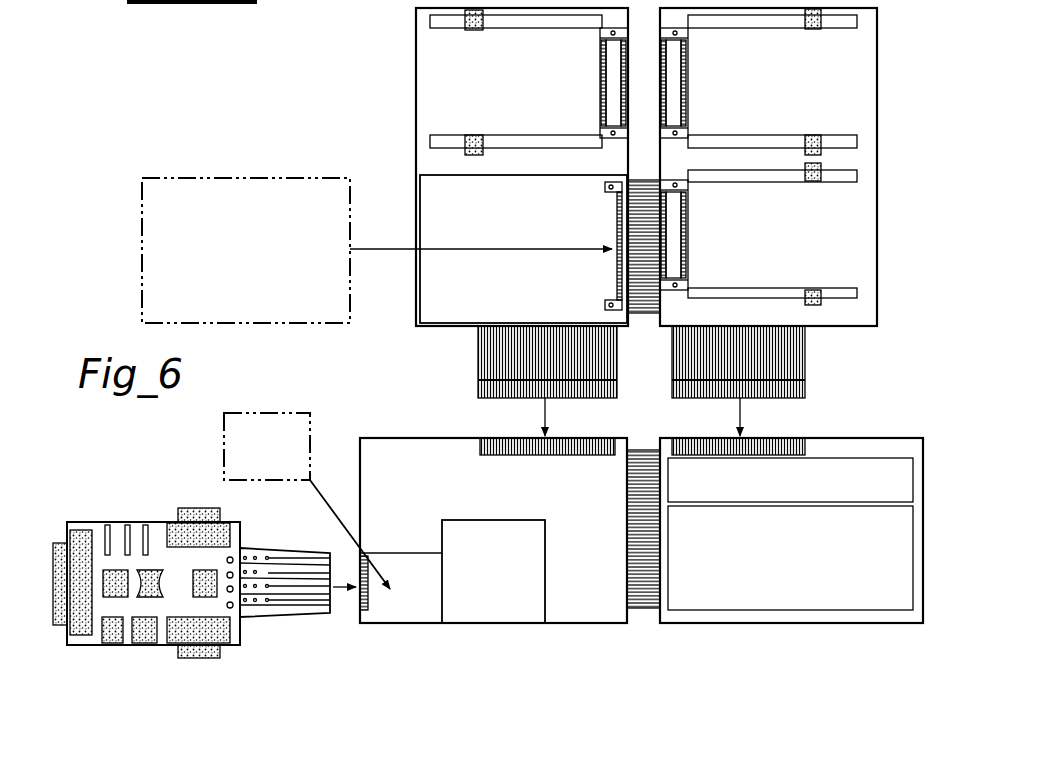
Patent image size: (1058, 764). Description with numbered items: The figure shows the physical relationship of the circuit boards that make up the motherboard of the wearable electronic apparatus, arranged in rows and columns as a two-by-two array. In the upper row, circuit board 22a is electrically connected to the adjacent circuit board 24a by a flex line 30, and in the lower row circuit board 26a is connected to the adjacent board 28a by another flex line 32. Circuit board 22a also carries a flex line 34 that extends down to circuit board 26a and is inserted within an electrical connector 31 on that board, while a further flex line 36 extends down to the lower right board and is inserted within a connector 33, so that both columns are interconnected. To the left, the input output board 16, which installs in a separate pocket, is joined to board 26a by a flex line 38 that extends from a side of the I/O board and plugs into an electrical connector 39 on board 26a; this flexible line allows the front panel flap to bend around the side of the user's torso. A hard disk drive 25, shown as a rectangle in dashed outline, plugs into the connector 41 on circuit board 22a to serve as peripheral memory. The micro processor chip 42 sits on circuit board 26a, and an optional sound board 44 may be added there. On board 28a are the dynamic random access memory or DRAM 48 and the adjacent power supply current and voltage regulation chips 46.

The input output board 16 is at (160, 522).
The circuit board 22a is at (405, 128).
The circuit board 24a is at (885, 128).
The hard disk drive 25 is at (266, 260).
The circuit board 26a is at (440, 434).
The circuit board 28a is at (820, 434).
The flex line 30 is at (640, 186).
The electrical connector 31 is at (590, 437).
The flex line 32 is at (649, 610).
The connector 33 is at (692, 436).
The flex line 34 is at (612, 370).
The flex line 36 is at (802, 370).
The flex line 38 is at (309, 614).
The electrical connector 39 is at (357, 604).
The connector 41 is at (618, 232).
The micro processor chip 42 is at (508, 587).
The sound board 44 is at (288, 458).
The power supply current and voltage regulation chips 46 is at (808, 497).
The dynamic random access memory (DRAM) 48 is at (808, 572).